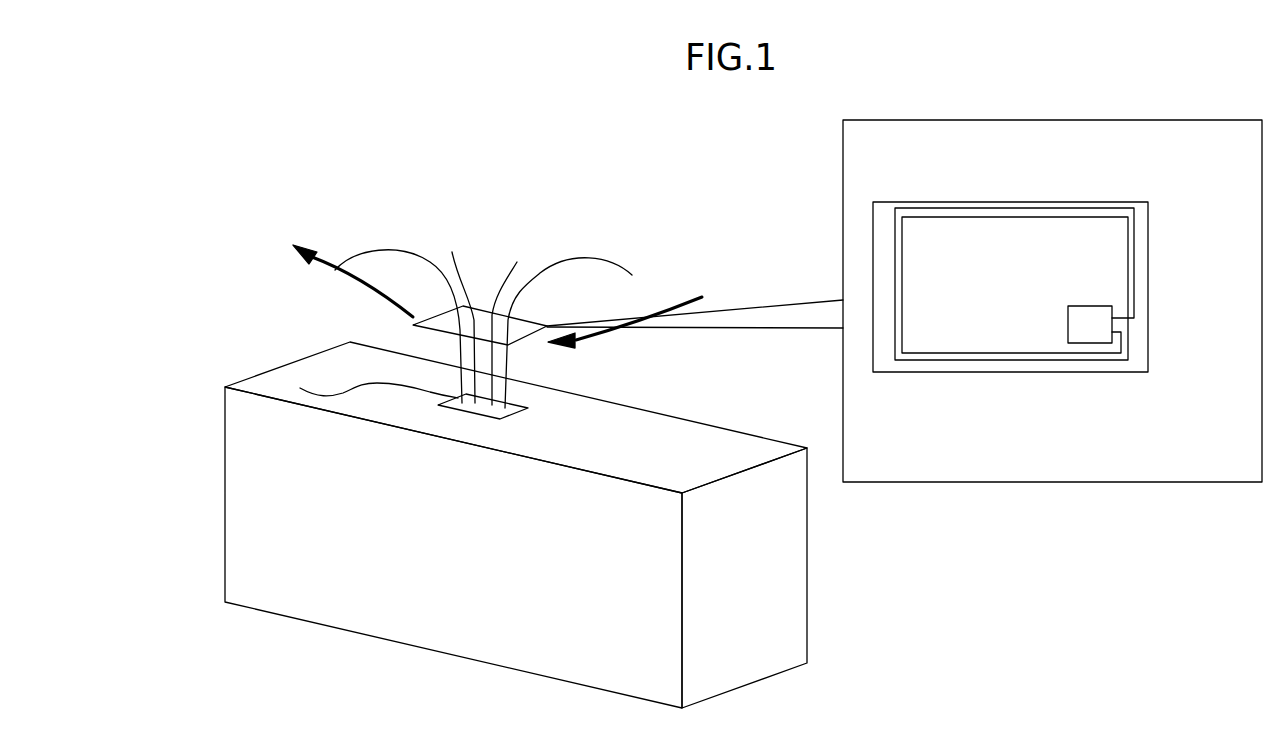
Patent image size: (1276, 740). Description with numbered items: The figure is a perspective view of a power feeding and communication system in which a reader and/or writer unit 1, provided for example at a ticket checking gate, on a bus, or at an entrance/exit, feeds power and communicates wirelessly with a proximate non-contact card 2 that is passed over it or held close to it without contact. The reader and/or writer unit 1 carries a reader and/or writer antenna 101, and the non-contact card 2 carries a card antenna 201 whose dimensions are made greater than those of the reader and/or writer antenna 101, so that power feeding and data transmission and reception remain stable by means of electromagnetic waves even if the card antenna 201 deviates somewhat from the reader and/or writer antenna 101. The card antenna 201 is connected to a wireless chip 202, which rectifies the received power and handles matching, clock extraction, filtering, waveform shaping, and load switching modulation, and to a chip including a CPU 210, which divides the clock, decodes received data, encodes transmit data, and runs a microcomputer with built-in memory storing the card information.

The reader and/or writer unit 1 is at (808, 620).
The non-contact card 2 is at (486, 312).
The reader and/or writer antenna 101 is at (300, 388).
The card antenna 201 is at (920, 201).
The wireless chip 202 is at (1047, 389).
The chip including CPU 210 is at (1090, 343).